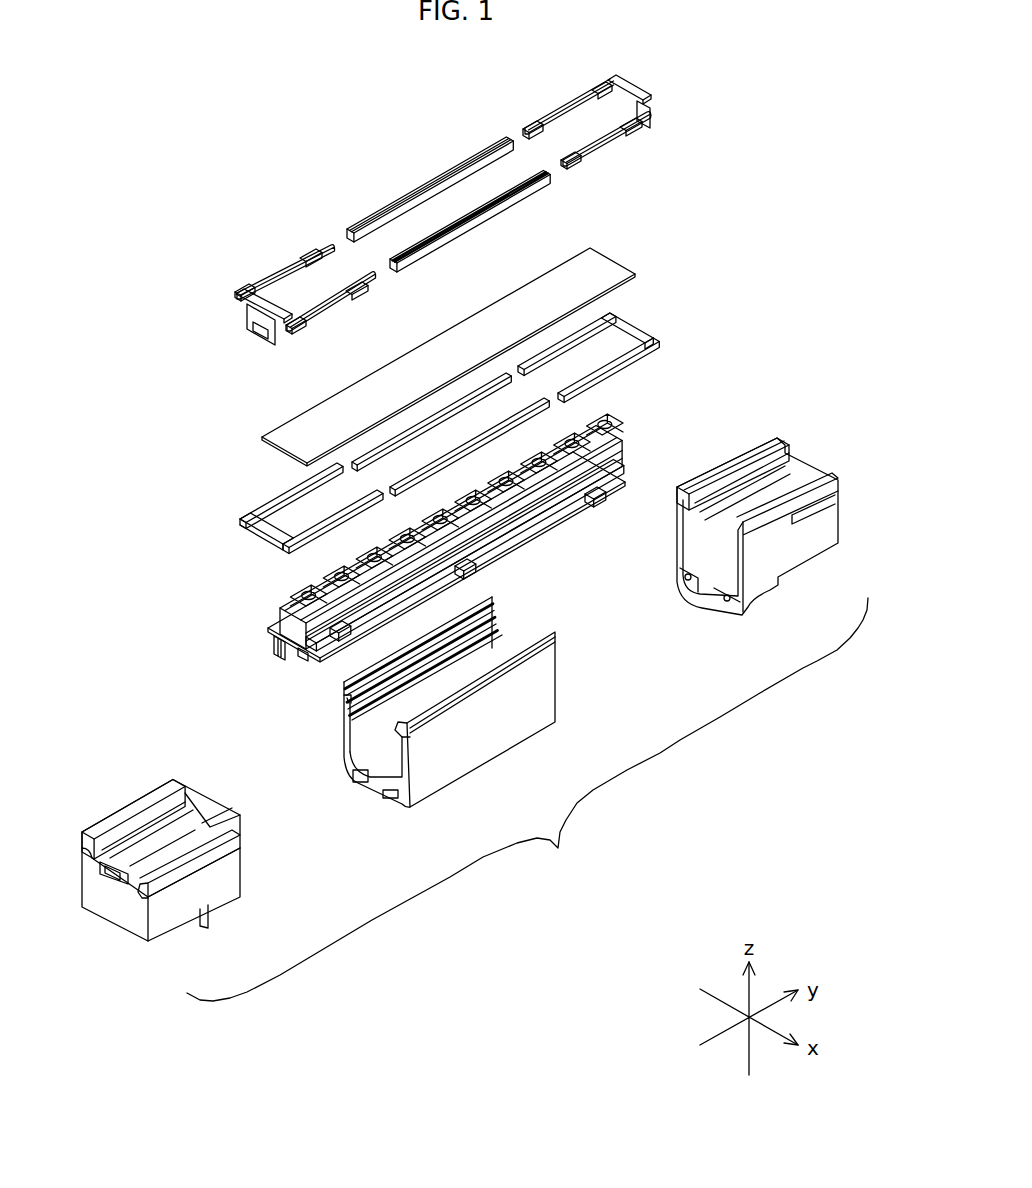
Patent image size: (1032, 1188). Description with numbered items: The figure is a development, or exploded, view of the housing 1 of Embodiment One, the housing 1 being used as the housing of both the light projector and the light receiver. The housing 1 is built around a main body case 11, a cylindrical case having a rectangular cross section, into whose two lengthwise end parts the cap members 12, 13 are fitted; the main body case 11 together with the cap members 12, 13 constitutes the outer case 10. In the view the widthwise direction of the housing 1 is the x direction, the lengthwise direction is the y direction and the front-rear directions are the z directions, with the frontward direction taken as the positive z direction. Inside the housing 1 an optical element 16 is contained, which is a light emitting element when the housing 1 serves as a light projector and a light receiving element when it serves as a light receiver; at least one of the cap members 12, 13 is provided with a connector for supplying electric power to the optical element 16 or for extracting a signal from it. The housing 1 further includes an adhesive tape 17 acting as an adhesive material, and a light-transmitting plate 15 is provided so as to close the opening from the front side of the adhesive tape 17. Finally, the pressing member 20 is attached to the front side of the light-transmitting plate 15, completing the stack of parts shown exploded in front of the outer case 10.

The housing 1 is at (172, 92).
The outer case 10 is at (527, 799).
The main body case 11 is at (493, 758).
The cap member 12 is at (215, 912).
The cap member 13 is at (793, 570).
The light-transmitting plate 15 is at (616, 259).
The optical element 16 is at (618, 448).
The adhesive tape 17 is at (636, 322).
The pressing member 20 is at (637, 96).